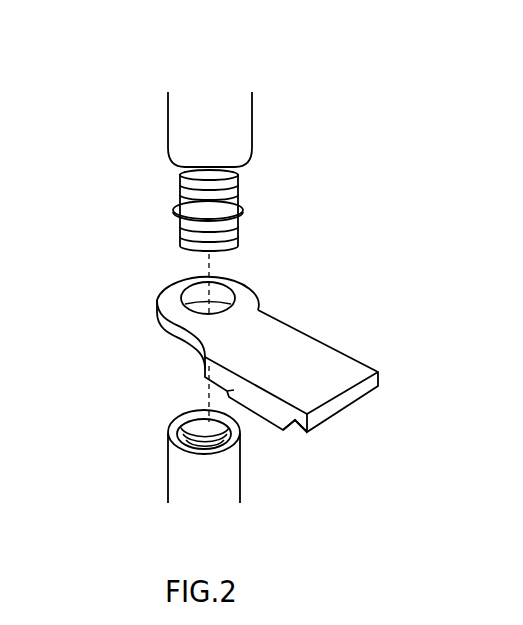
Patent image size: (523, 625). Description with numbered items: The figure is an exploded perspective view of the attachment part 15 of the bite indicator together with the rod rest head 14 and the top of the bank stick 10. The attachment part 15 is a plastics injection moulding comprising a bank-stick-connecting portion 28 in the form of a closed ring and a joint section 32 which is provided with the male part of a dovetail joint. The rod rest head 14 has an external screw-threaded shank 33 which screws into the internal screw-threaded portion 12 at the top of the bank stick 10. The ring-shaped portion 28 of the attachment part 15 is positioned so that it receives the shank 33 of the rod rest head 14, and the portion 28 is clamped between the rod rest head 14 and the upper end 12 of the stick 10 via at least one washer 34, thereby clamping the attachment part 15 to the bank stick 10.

The bank stick 10 is at (217, 456).
The internal screw-threaded portion 12 is at (170, 487).
The rod rest head 14 is at (168, 113).
The attachment part 15 is at (246, 363).
The bank-stick-connecting portion 28 is at (158, 298).
The joint section 32 is at (327, 397).
The external screw-threaded shank 33 is at (237, 178).
The washer 34 is at (174, 211).